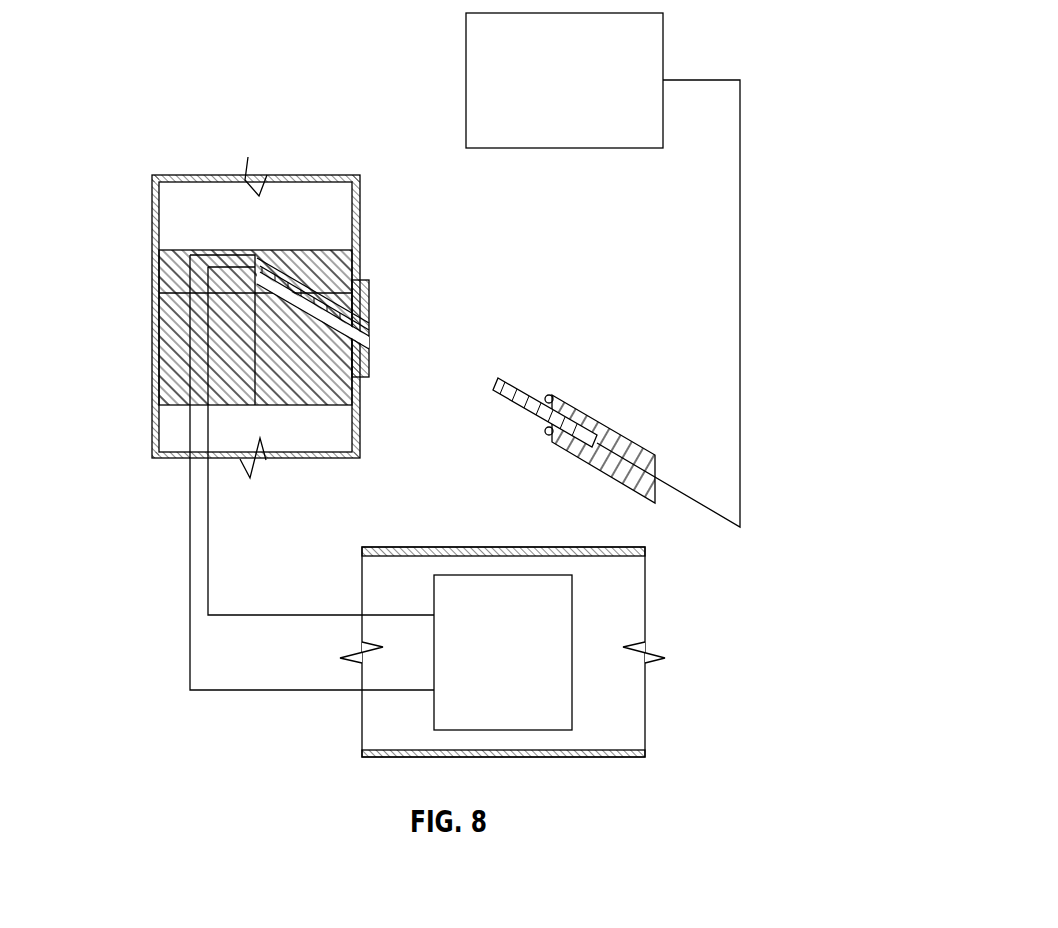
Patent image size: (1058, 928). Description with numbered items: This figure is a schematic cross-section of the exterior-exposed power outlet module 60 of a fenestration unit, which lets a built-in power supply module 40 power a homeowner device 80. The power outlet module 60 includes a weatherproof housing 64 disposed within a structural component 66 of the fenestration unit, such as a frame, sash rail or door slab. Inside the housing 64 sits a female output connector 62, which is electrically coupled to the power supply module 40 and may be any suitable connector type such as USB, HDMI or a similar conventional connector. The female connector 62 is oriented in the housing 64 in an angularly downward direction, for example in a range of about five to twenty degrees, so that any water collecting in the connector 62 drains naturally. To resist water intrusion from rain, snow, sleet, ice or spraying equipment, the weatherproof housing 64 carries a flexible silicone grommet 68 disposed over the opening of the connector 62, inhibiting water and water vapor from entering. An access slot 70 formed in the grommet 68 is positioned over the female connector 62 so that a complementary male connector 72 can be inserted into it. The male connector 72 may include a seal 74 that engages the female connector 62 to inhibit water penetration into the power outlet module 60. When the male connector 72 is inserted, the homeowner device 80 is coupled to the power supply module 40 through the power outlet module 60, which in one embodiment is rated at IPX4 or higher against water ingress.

The power supply module 40 is at (516, 665).
The power outlet module 60 is at (125, 377).
The female output connector 62 is at (316, 294).
The weatherproof housing 64 is at (348, 384).
The structural component 66 is at (156, 216).
The flexible silicone grommet 68 is at (368, 300).
The access slot 70 is at (368, 337).
The male connector 72 is at (595, 428).
The seal 74 is at (547, 397).
The homeowner device 80 is at (579, 93).